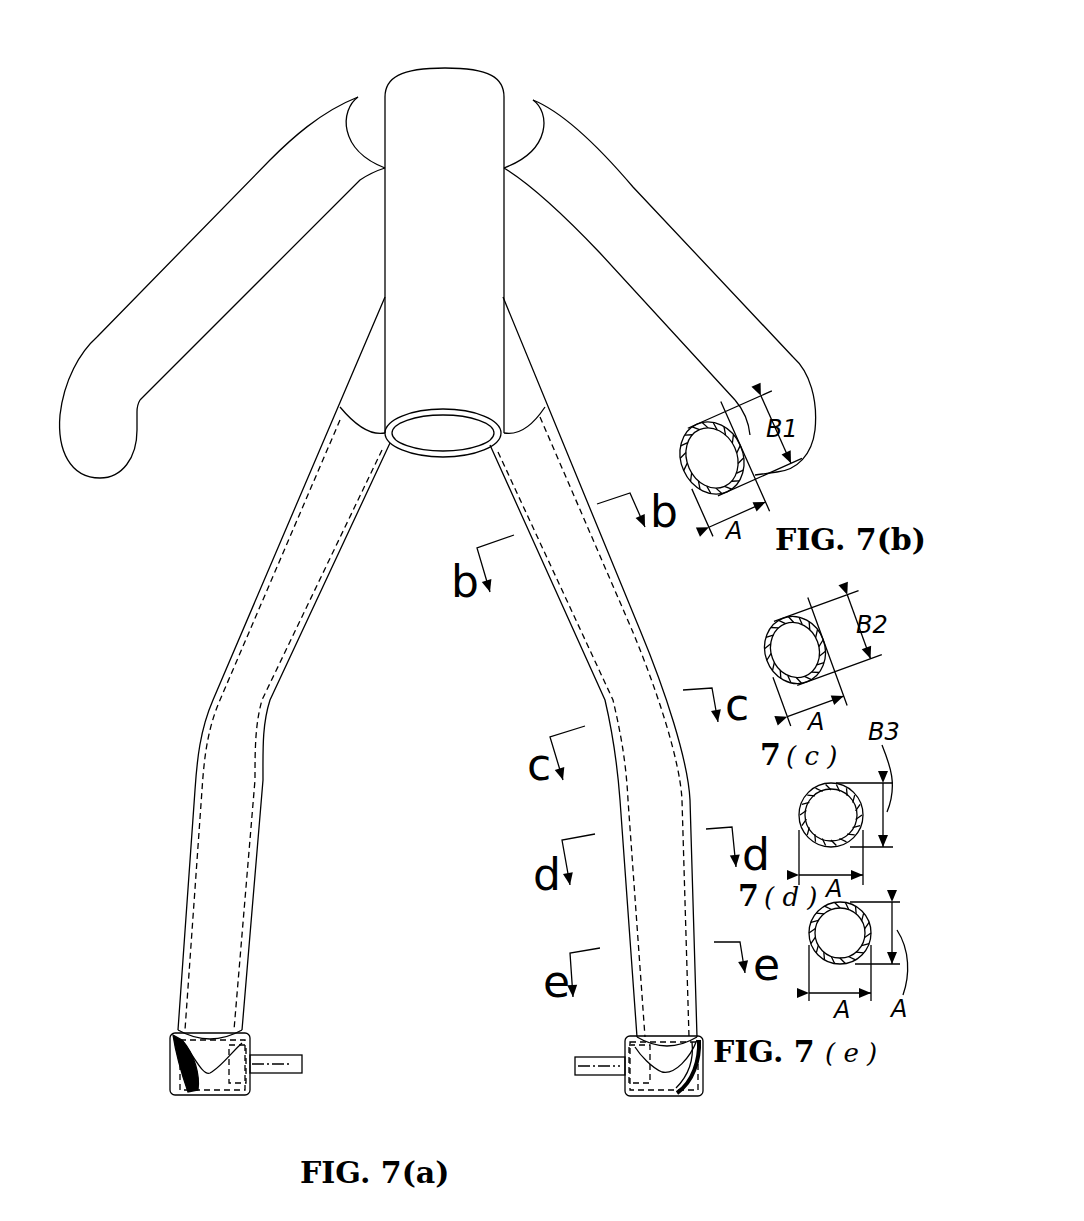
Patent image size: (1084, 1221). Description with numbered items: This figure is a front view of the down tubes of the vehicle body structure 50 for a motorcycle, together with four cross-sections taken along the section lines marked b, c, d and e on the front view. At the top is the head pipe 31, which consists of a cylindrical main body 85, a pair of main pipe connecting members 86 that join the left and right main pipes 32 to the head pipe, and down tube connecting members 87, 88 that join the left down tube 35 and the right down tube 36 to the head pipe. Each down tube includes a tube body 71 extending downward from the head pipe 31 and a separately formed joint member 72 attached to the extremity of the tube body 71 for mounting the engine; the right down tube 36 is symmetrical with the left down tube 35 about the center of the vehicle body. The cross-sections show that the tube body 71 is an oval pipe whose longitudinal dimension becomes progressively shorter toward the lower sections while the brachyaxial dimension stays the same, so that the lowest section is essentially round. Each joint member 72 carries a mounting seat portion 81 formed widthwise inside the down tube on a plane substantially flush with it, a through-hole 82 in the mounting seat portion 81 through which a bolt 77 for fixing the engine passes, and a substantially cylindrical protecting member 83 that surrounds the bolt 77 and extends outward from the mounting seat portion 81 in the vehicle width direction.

The vehicle body structure 50 is at (197, 62).
The main pipe 32 is at (272, 158).
The main pipe connecting member 86 is at (358, 97).
The cylindrical main body 85 is at (448, 100).
The head pipe 31 is at (528, 247).
The down tube connecting member 88 is at (358, 357).
The down tube connecting member 87 is at (532, 365).
The right down tube 36 is at (310, 407).
The left down tube 35 is at (575, 437).
The tube body 71 is at (285, 605).
The bolt 77 is at (273, 1055).
The joint member 72 is at (168, 1075).
The through-hole 82 is at (625, 1068).
The mounting seat portion 81 is at (626, 1090).
The protecting member 83 is at (657, 1098).